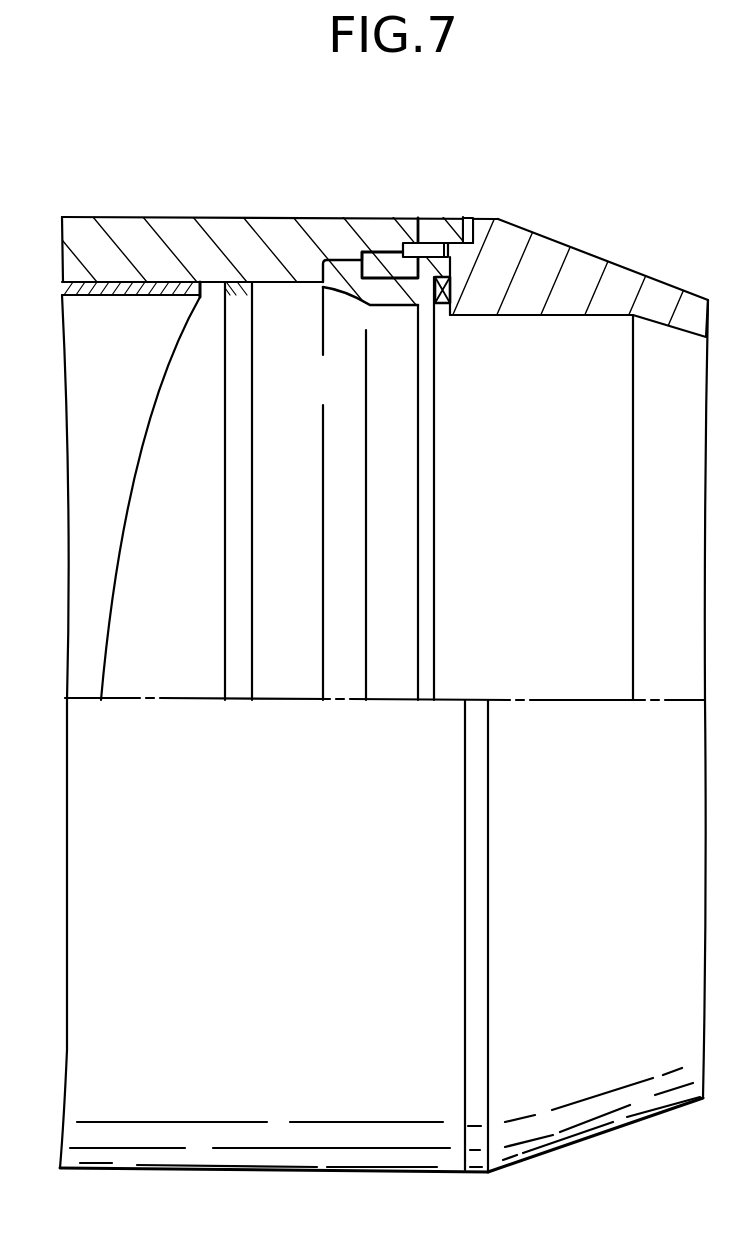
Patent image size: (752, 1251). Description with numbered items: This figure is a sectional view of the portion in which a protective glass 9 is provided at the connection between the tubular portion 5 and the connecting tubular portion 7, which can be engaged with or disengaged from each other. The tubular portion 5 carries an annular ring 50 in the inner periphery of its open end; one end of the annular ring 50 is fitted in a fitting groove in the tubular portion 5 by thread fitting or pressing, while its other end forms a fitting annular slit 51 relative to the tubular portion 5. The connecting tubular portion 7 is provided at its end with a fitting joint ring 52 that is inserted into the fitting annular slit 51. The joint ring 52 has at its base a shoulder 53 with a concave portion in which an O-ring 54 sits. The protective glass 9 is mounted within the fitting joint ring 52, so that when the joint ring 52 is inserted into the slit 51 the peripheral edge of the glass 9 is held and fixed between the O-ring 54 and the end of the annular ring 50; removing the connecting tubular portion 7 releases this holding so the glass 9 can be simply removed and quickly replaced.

The tubular portion 5 is at (253, 217).
The connecting tubular portion 7 is at (543, 233).
The protective glass 9 is at (435, 578).
The annular ring 50 is at (370, 300).
The fitting annular slit 51 is at (360, 252).
The fitting joint ring 52 is at (417, 243).
The shoulder 53 is at (452, 262).
The O-ring 54 is at (463, 218).